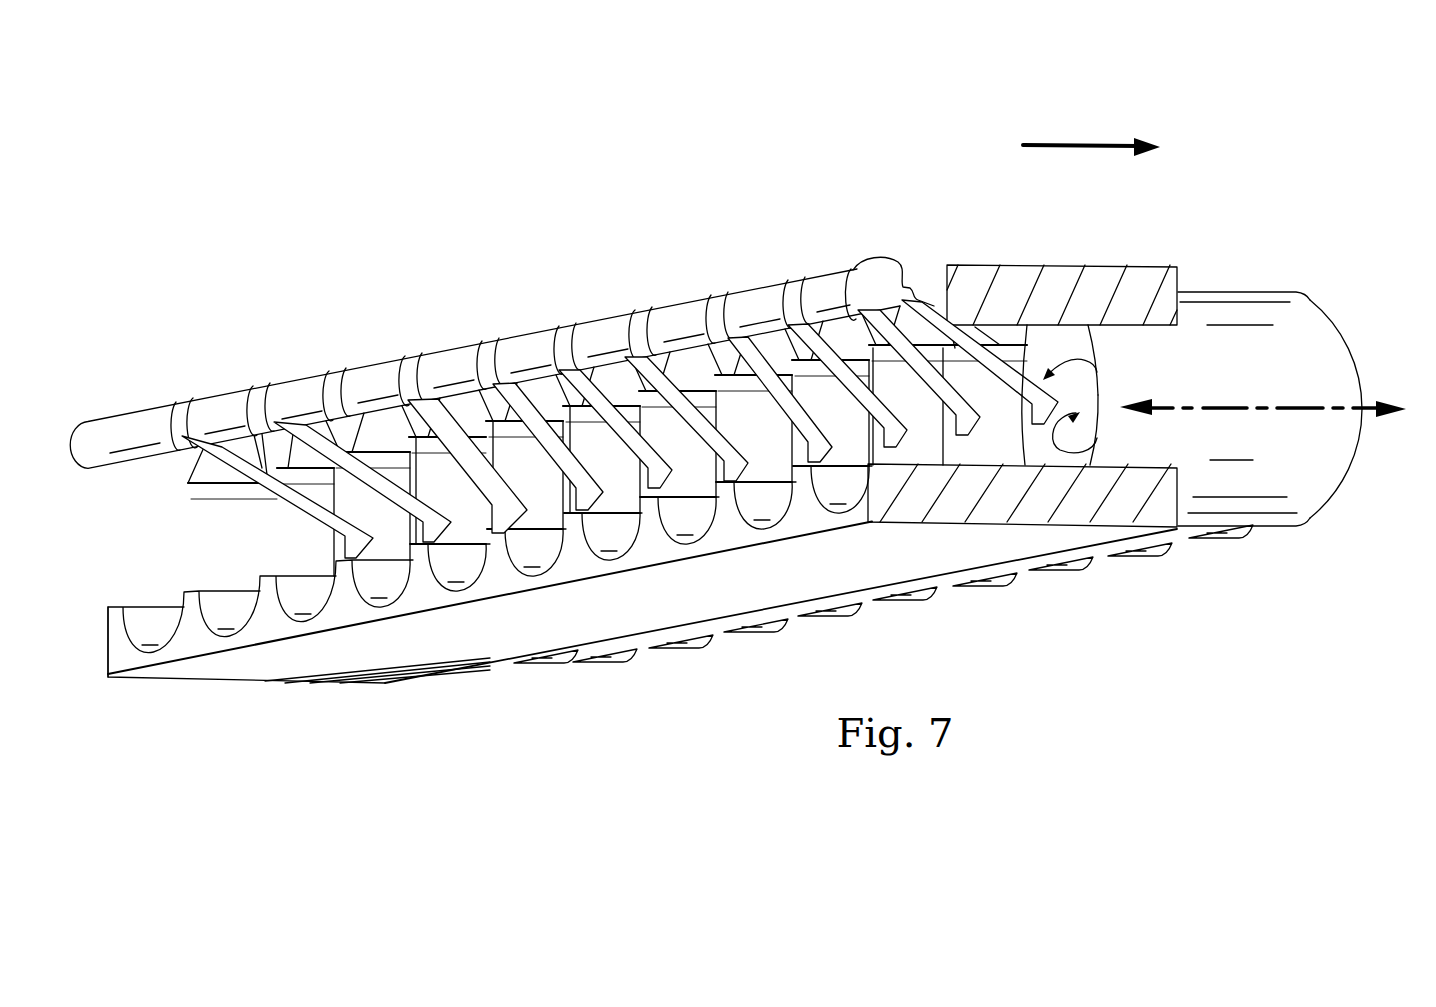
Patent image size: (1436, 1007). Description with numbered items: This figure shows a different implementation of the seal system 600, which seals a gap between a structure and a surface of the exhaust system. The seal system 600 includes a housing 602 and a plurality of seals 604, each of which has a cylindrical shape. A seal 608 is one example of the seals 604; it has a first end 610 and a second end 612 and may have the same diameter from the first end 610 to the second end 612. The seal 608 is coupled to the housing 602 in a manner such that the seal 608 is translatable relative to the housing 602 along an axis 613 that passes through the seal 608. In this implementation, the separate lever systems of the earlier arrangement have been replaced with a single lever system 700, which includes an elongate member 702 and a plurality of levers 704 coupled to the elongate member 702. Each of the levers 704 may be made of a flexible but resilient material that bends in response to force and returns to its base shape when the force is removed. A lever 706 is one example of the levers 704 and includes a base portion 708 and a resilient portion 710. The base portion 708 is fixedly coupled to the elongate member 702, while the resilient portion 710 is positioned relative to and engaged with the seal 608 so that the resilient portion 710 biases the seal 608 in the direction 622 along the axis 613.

The seal system 600 is at (386, 203).
The housing 602 is at (1160, 264).
The seals 604 is at (1305, 370).
The seal 608 is at (578, 664).
The first end 610 is at (1360, 338).
The second end 612 is at (1098, 434).
The axis 613 is at (1296, 405).
The direction 622 is at (1080, 143).
The lever system 700 is at (564, 386).
The elongate member 702 is at (318, 378).
The levers 704 is at (278, 506).
The lever 706 is at (1100, 378).
The base portion 708 is at (900, 266).
The resilient portion 710 is at (988, 343).